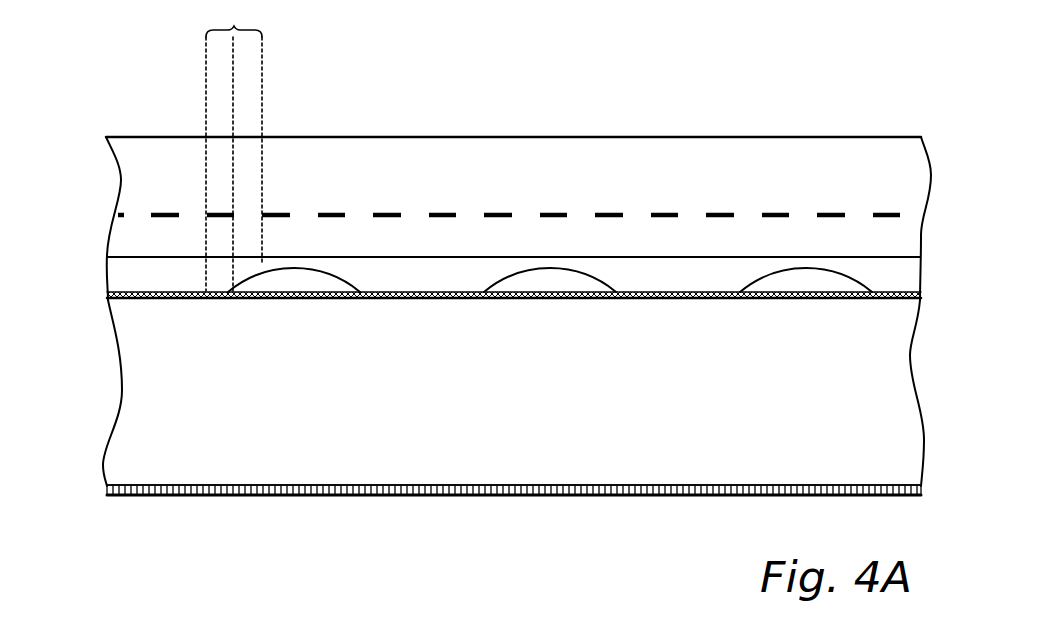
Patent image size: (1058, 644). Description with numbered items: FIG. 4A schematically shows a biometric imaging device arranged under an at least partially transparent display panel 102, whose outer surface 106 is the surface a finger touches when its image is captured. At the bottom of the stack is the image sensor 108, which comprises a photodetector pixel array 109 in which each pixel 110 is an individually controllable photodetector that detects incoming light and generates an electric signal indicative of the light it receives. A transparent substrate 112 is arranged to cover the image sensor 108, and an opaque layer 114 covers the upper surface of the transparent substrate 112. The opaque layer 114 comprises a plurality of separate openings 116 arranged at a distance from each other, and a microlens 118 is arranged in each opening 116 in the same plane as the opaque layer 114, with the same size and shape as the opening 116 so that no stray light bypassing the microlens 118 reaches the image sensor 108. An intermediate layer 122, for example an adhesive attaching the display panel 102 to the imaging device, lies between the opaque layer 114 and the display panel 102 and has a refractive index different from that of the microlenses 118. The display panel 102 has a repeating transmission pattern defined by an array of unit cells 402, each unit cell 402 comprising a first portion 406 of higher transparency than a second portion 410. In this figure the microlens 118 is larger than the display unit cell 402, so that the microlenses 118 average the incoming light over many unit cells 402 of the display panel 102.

The display panel 102 is at (136, 190).
The outer surface 106 is at (704, 137).
The image sensor 108 is at (107, 489).
The photodetector pixel array 109 is at (143, 483).
The pixel 110 is at (157, 496).
The transparent substrate 112 is at (635, 435).
The opaque layer 114 is at (147, 298).
The opening 116 is at (828, 300).
The microlens 118 is at (557, 290).
The intermediate layer 122 is at (128, 268).
The unit cell 402 is at (234, 145).
The first portion 406 is at (251, 112).
The second portion 410 is at (212, 112).